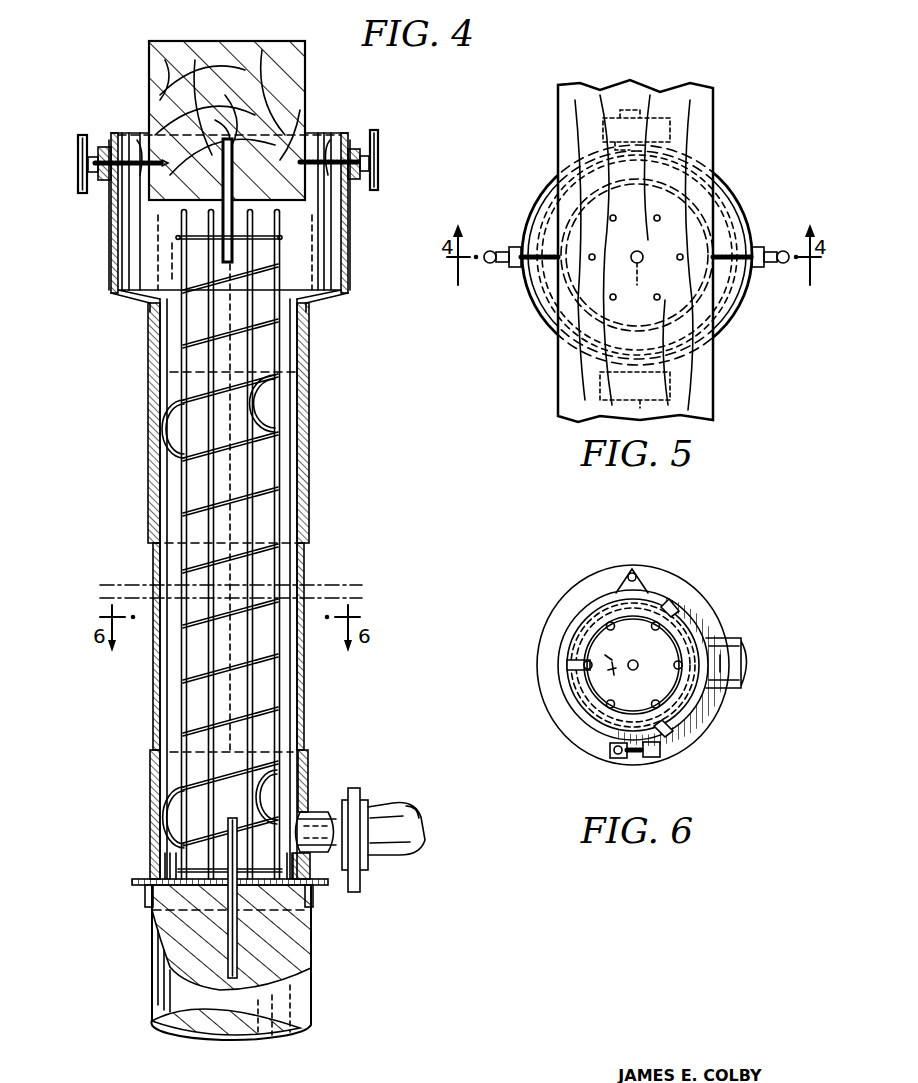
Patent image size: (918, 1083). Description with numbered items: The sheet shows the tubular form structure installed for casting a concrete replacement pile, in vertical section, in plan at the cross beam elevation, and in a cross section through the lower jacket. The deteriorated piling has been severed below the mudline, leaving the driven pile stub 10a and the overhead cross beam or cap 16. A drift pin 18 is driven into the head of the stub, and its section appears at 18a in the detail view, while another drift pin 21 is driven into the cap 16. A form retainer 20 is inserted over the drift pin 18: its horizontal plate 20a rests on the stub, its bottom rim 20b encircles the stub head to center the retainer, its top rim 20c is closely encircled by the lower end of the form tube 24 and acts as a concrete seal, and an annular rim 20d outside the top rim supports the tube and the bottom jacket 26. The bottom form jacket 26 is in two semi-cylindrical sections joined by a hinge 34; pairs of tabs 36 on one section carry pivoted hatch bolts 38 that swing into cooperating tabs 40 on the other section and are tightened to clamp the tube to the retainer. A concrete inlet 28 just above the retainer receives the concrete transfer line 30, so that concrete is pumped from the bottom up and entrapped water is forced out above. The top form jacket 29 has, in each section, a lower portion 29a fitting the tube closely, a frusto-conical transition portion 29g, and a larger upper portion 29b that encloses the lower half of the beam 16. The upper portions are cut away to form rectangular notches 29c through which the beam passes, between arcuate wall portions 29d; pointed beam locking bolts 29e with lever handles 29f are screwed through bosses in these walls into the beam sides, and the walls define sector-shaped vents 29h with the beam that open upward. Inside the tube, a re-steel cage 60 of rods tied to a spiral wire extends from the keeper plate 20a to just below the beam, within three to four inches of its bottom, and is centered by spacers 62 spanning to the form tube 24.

In FIG. 4, the cross beam or cap 16 is at (180, 66).
In FIG. 5, the cross beam or cap 16 is at (705, 393).
In FIG. 4, the drift pin 18 is at (238, 926).
In FIG. 6, the shaft end 18a is at (640, 668).
In FIG. 4, the form retainer 20 is at (118, 876).
In FIG. 4, the horizontal plate 20a is at (140, 888).
In FIG. 4, the bottom cylindrical rim 20b is at (313, 903).
In FIG. 4, the top cylindrical rim 20c is at (157, 920).
In FIG. 4, the annular rim 20d is at (140, 870).
In FIG. 4, the drift pin 21 is at (237, 208).
In FIG. 5, the drift pin 21 is at (631, 287).
In FIG. 4, the form tube 24 is at (305, 560).
In FIG. 5, the form tube 24 is at (640, 253).
In FIG. 4, the bottom form jacket 26 is at (318, 764).
In FIG. 6, the bottom form jacket 26 is at (713, 613).
In FIG. 4, the concrete inlet 28 is at (366, 773).
In FIG. 4, the top form jacket 29 is at (322, 355).
In FIG. 4, the lower semi-cylindrical portion 29a is at (150, 400).
In FIG. 5, the lower semi-cylindrical portion 29a is at (700, 182).
In FIG. 4, the upper semi-cylindrical portion 29b is at (110, 268).
In FIG. 5, the upper semi-cylindrical portion 29b is at (727, 196).
In FIG. 4, the rectangular notches 29c is at (343, 142).
In FIG. 5, the rectangular notches 29c is at (560, 172).
In FIG. 4, the arcuate wall portions 29d is at (131, 165).
In FIG. 5, the arcuate wall portions 29d is at (545, 310).
In FIG. 6, the arcuate wall portions 29d is at (704, 594).
In FIG. 4, the beam locking bolts 29e is at (133, 178).
In FIG. 5, the beam locking bolts 29e is at (530, 246).
In FIG. 4, the lever handles 29f is at (80, 150).
In FIG. 5, the lever handles 29f is at (488, 265).
In FIG. 4, the transition portion 29g is at (140, 303).
In FIG. 4, the sector-shaped vents 29h is at (137, 160).
In FIG. 5, the sector-shaped vents 29h is at (560, 322).
In FIG. 4, the concrete transfer line 30 is at (395, 803).
In FIG. 6, the hinge 34 is at (632, 563).
In FIG. 6, the tabs 36 is at (612, 760).
In FIG. 6, the hatch bolt 38 is at (632, 760).
In FIG. 4, the cooperating tabs 40 is at (312, 810).
In FIG. 6, the cooperating tabs 40 is at (725, 646).
In FIG. 4, the re-steel cage 60 is at (287, 497).
In FIG. 6, the re-steel cage 60 is at (590, 615).
In FIG. 4, the spacers 62 is at (262, 404).
In FIG. 6, the spacers 62 is at (662, 600).
In FIG. 4, the pile stub 10a is at (300, 948).